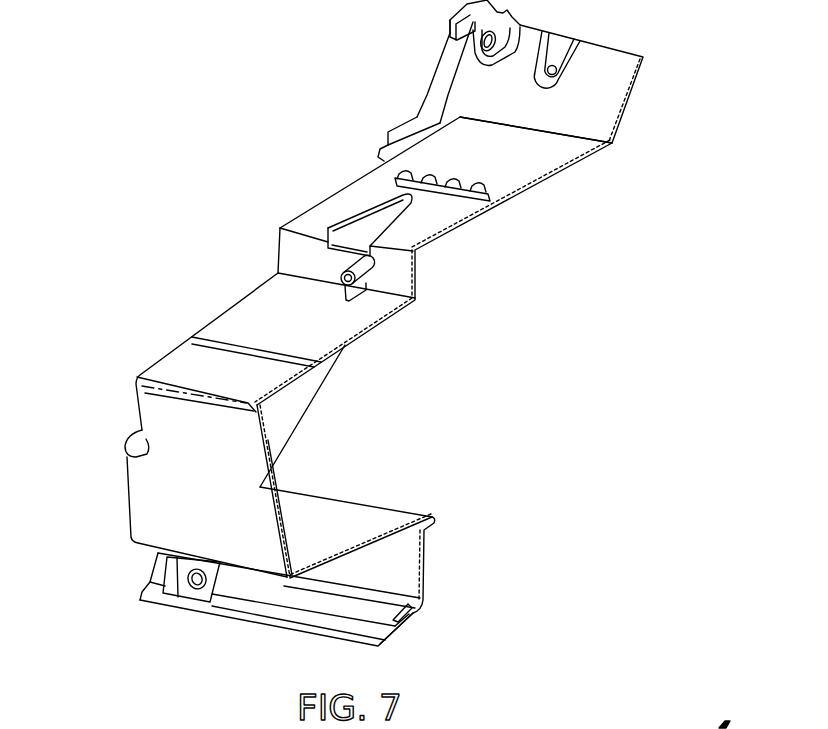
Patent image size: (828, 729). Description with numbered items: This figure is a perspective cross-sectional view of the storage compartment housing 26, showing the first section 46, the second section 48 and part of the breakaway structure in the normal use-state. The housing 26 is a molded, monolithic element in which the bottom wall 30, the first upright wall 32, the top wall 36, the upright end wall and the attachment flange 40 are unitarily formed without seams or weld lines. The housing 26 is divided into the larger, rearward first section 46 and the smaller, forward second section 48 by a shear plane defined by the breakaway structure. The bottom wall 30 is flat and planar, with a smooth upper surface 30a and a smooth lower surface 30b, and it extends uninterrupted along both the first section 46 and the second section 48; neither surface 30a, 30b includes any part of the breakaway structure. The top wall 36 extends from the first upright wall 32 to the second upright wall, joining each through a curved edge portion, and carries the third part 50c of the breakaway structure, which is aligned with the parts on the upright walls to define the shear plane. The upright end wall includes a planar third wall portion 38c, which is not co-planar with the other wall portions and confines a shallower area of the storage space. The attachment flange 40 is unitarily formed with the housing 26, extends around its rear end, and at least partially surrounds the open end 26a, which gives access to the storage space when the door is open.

The housing 26 is at (221, 149).
The open end 26a is at (325, 386).
The bottom wall 30 is at (368, 520).
The upper surface 30a is at (312, 520).
The lower surface 30b is at (330, 562).
The first upright wall 32 is at (290, 412).
The top wall 36 is at (328, 340).
The third wall portion 38c is at (168, 493).
The attachment flange 40 is at (440, 74).
The first section 46 is at (260, 310).
The second section 48 is at (182, 365).
The third part 50c is at (215, 348).